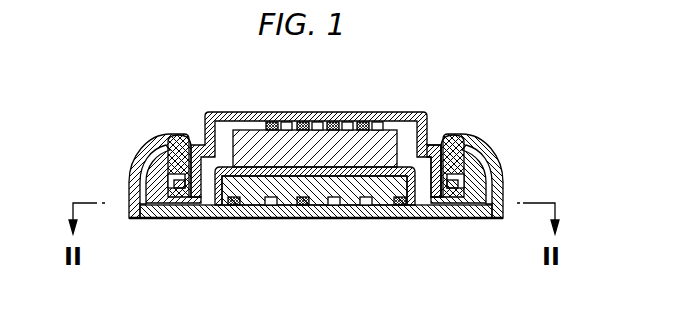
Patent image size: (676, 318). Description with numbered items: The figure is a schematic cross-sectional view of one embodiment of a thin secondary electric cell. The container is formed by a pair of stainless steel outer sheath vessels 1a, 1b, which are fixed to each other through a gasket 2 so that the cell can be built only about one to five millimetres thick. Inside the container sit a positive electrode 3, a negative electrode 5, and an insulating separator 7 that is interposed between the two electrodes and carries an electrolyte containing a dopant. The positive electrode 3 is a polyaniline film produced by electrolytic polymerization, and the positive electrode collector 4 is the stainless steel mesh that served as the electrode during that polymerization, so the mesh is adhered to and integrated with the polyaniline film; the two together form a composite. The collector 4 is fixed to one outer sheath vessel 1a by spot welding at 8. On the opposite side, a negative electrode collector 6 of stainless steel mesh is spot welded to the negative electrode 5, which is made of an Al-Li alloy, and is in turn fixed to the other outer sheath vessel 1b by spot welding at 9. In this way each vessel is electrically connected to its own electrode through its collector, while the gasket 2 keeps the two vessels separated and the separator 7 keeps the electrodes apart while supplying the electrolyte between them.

The outer sheath vessel 1a is at (207, 210).
The outer sheath vessel 1b is at (270, 115).
The gasket 2 is at (468, 157).
The positive electrode 3 is at (367, 197).
The positive electrode collector 4 is at (429, 143).
The negative electrode 5 is at (343, 137).
The negative electrode collector 6 is at (333, 125).
The separator 7 is at (246, 150).
The spot welding 8 is at (385, 220).
The spot welding 9 is at (298, 125).